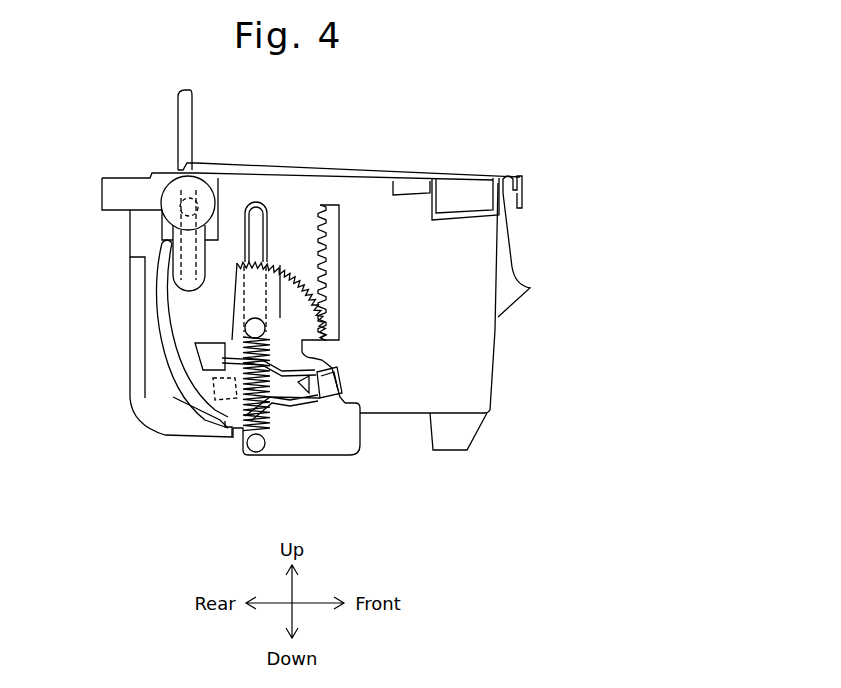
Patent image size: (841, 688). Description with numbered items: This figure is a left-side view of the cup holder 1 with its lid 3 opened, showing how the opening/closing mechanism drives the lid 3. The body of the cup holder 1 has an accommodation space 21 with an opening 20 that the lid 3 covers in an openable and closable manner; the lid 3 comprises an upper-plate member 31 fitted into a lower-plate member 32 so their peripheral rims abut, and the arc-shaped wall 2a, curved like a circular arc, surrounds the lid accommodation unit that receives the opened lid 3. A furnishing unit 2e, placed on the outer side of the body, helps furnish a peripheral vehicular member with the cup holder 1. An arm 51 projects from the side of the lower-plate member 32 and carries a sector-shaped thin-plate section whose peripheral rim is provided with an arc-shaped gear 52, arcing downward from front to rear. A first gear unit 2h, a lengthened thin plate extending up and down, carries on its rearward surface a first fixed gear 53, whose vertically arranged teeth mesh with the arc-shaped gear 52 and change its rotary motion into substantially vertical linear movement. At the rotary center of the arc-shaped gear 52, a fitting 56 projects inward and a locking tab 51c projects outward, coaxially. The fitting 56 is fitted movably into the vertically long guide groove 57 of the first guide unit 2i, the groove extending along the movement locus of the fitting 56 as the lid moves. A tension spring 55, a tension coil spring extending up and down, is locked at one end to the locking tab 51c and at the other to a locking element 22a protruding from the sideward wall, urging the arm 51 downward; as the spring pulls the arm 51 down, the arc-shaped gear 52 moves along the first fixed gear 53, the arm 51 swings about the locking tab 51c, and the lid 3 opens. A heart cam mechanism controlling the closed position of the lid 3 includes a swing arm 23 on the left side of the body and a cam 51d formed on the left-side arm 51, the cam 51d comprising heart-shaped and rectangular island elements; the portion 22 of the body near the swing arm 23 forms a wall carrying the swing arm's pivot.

The cup holder 1 is at (487, 139).
The lid 3 is at (182, 115).
The furnishing unit 2e is at (375, 173).
The first gear unit 2h is at (330, 208).
The arc-shaped wall 2a is at (165, 380).
The first guide unit 2i is at (233, 317).
The opening 20 is at (353, 190).
The accommodation space 21 is at (420, 210).
The frame body 22 is at (413, 390).
The locking element 22a is at (257, 452).
The swing arm 23 is at (170, 210).
The upper-plate member 31 is at (173, 395).
The lower-plate member 32 is at (203, 392).
The arm 51 is at (280, 290).
The locking tab 51c is at (242, 232).
The cam 51d is at (310, 413).
The arc-shaped gear 52 is at (288, 265).
The first fixed gear 53 is at (327, 320).
The tension spring 55 is at (240, 413).
The fitting 56 is at (240, 370).
The guide groove 57 is at (262, 208).